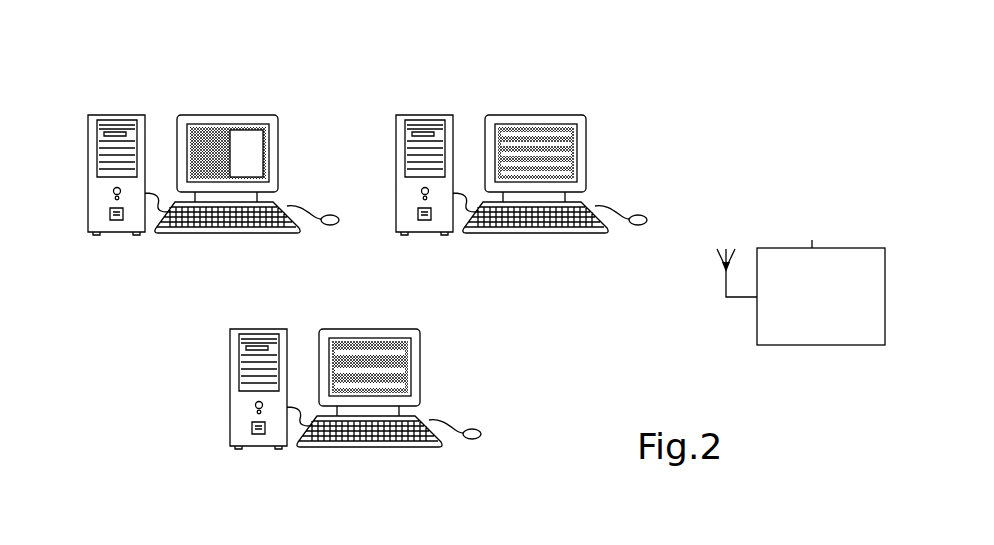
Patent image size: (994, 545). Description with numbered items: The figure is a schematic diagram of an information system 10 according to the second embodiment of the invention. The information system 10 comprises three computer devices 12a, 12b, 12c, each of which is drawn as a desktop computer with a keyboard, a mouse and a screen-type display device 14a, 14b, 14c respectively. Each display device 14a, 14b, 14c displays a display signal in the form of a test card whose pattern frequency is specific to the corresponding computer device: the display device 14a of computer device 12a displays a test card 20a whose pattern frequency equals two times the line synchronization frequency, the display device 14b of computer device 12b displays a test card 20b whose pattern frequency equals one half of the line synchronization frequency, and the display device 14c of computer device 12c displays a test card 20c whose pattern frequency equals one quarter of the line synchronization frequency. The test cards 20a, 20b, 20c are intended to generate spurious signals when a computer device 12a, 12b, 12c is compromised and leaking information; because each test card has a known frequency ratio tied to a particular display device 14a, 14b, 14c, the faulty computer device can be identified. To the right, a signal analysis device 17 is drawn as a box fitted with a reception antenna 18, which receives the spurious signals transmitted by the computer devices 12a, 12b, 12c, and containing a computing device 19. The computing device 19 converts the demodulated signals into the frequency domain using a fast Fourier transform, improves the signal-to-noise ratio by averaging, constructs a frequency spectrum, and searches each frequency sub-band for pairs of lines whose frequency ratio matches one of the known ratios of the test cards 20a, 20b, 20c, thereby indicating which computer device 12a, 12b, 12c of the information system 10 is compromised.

The information system 10 is at (719, 95).
The computer device 12a is at (197, 167).
The computer device 12b is at (509, 167).
The computer device 12c is at (351, 392).
The display device 14a is at (250, 115).
The display device 14b is at (558, 115).
The display device 14c is at (393, 329).
The signal analysis device 17 is at (810, 272).
The reception antenna 18 is at (735, 298).
The computing device 19 is at (812, 248).
The test card 20a is at (240, 140).
The test card 20b is at (545, 140).
The test card 20c is at (400, 382).